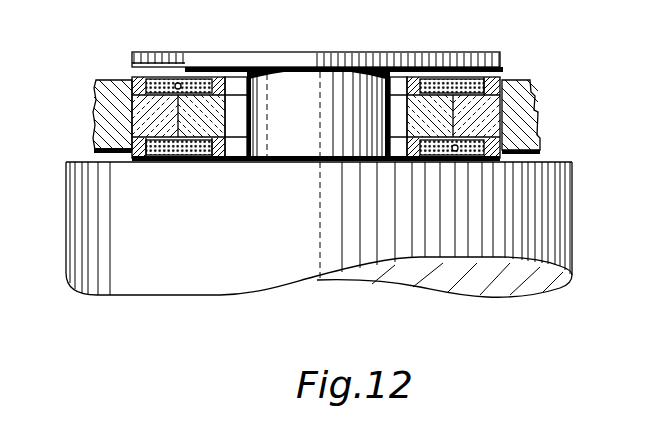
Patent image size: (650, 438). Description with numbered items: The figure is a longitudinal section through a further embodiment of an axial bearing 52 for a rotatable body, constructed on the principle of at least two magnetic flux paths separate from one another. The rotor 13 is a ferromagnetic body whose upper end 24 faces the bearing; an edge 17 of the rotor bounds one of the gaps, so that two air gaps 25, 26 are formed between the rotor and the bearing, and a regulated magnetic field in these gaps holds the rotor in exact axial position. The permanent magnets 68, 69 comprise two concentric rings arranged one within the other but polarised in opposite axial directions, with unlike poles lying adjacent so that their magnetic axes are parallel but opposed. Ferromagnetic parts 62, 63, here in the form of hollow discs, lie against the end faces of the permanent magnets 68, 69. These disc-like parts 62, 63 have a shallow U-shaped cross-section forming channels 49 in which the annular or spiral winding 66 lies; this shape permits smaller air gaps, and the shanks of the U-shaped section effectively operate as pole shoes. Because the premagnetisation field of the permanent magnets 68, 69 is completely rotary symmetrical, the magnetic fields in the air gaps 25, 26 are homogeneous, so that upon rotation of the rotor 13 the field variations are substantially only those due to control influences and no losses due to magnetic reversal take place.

The rotor 13 is at (308, 257).
The edge 17 is at (548, 162).
The upper end 24 is at (347, 58).
The air gap 25 is at (447, 73).
The air gap 26 is at (114, 163).
The channel 49 is at (140, 163).
The bearing 52 is at (513, 78).
The ferromagnetic part 62 is at (218, 82).
The ferromagnetic part 63 is at (216, 160).
The annular or spiral winding 66 is at (166, 160).
The permanent magnet 68 is at (412, 115).
The permanent magnet 69 is at (483, 72).